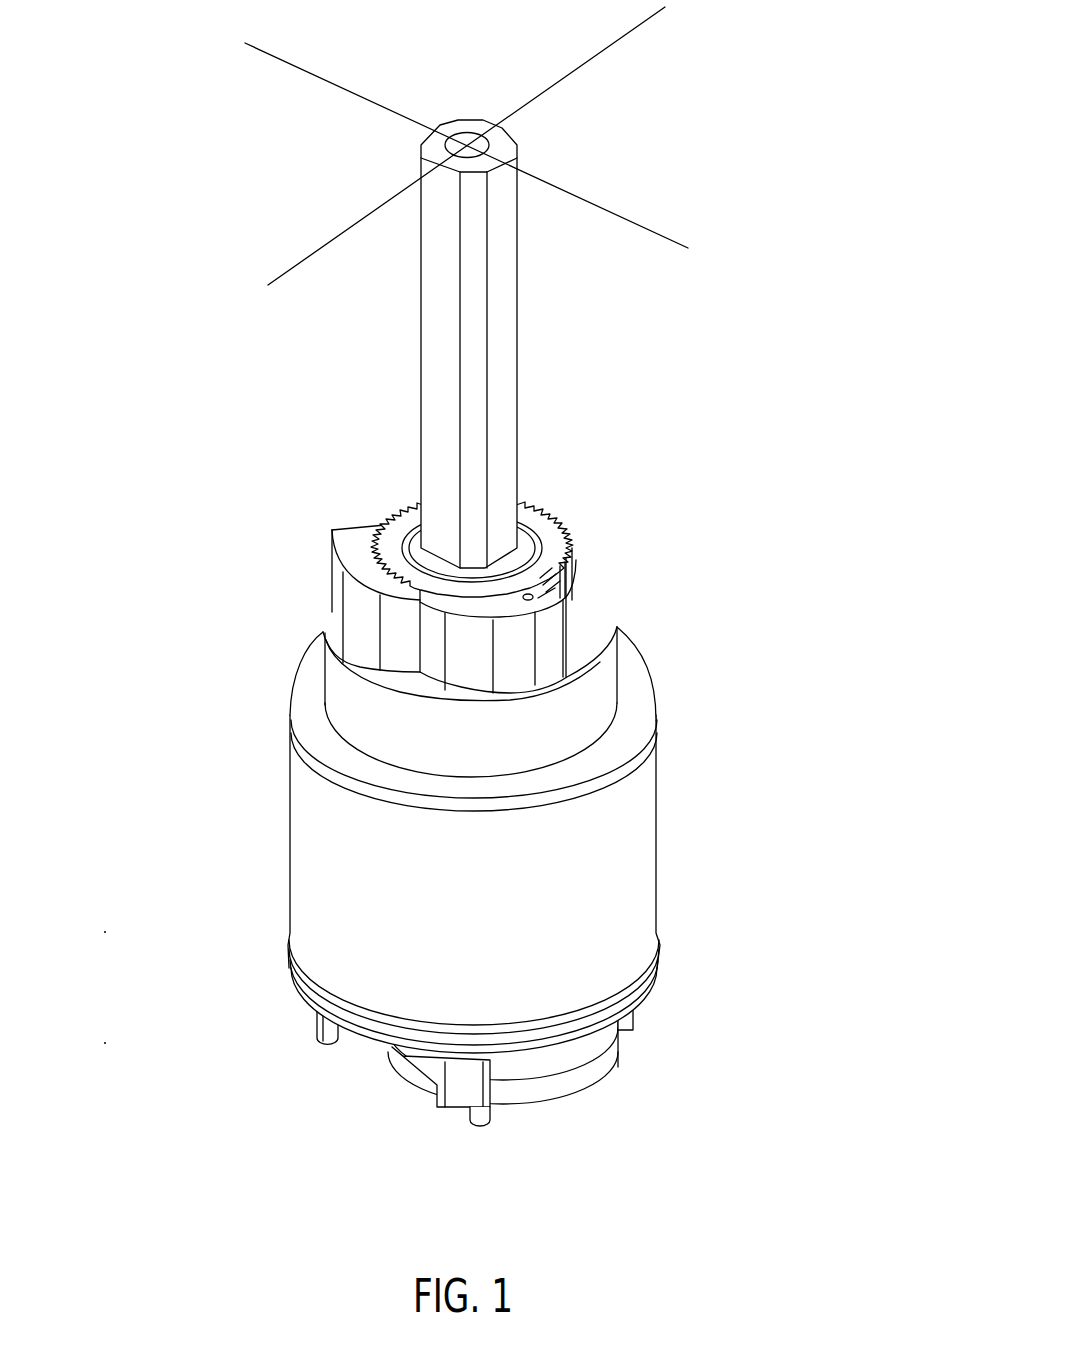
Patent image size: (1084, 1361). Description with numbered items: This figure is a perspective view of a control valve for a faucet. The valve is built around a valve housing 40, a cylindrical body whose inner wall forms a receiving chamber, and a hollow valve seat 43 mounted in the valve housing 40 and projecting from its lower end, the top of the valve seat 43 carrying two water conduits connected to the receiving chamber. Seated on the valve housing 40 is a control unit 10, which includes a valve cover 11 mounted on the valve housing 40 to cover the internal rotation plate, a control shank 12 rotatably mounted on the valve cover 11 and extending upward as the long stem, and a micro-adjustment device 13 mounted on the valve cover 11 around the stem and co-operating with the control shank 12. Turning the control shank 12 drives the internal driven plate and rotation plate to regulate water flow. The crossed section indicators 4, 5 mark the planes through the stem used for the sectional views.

The section line 4- 4 is at (245, 43).
The section line 5- 5 is at (665, 7).
The control unit 10 is at (527, 448).
The valve cover 11 is at (318, 715).
The control shank 12 is at (448, 503).
The micro-adjustment device 13 is at (547, 532).
The valve housing 40 is at (672, 867).
The valve seat 43 is at (573, 1060).